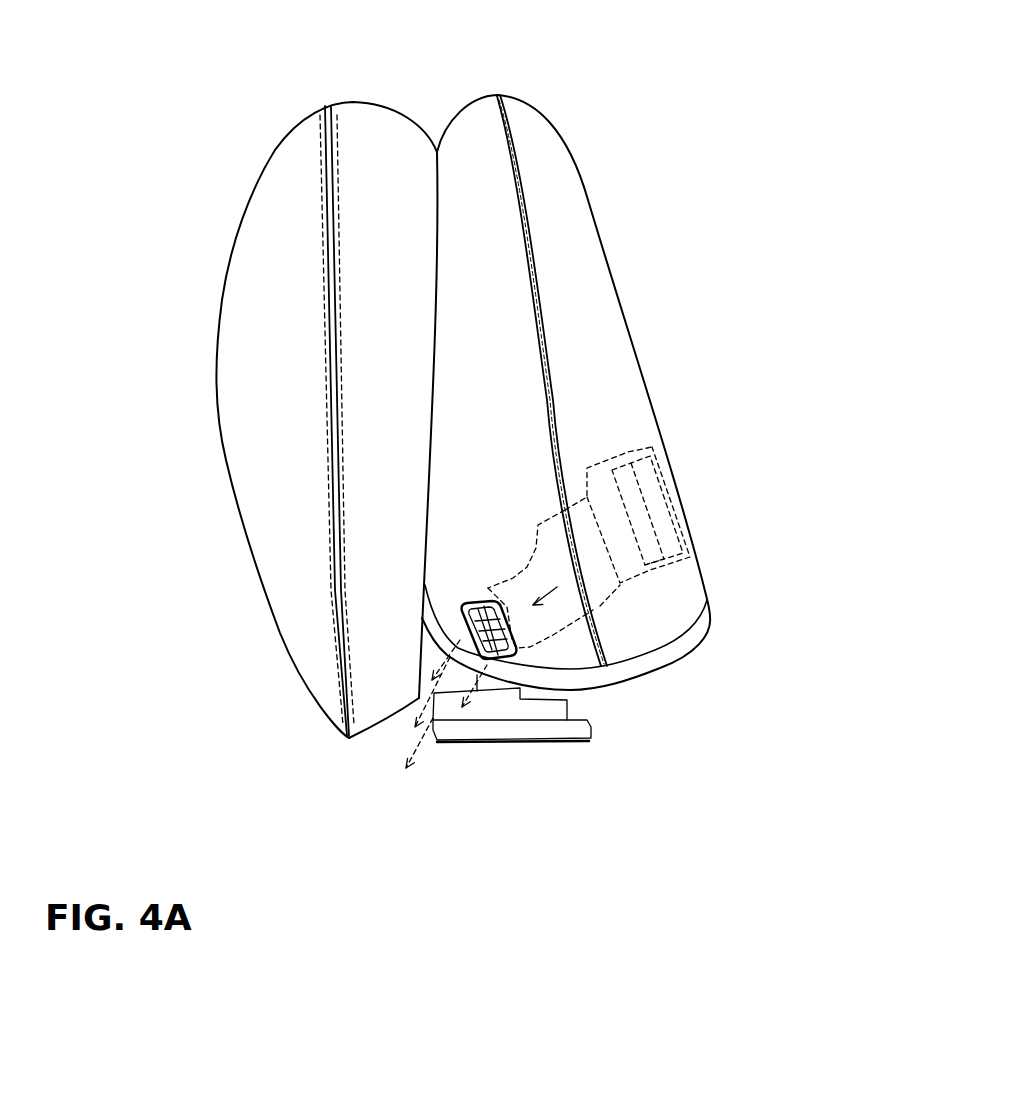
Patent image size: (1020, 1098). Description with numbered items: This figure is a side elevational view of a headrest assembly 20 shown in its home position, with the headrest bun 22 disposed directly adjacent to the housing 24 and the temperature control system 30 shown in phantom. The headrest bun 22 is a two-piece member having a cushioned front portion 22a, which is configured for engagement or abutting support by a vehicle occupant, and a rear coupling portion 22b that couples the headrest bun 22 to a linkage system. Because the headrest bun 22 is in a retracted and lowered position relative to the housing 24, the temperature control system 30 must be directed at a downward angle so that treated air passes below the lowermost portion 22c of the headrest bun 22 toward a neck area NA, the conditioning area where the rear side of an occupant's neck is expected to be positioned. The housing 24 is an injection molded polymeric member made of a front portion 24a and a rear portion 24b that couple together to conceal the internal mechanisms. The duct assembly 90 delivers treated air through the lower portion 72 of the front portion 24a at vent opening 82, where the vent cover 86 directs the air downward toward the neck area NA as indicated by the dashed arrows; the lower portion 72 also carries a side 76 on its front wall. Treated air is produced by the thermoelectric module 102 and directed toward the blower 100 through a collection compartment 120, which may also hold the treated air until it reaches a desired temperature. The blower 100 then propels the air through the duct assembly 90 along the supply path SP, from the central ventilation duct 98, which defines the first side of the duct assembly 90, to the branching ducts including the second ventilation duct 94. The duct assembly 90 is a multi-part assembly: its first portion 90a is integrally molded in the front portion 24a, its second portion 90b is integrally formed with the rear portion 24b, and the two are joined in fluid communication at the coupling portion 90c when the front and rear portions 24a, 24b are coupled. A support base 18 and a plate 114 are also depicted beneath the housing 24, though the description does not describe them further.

The headrest assembly 20 is at (585, 65).
The headrest bun 22 is at (155, 498).
The cushioned front portion 22a is at (253, 230).
The rear coupling portion 22b is at (367, 118).
The lowermost portion 22c is at (363, 740).
The housing 24 is at (606, 215).
The front portion 24a is at (482, 117).
The rear portion 24b is at (630, 323).
The temperature control system 30 is at (623, 605).
The lower portion 72 is at (462, 632).
The second side 76 is at (317, 657).
The second vent opening 82 is at (462, 604).
The vent cover 86 is at (455, 625).
The duct assembly 90 is at (567, 640).
The first portion 90a is at (537, 527).
The second portion 90b is at (572, 508).
The coupling portion 90c is at (543, 520).
The second ventilation duct 94 is at (517, 593).
The central ventilation duct 98 is at (598, 567).
The blower 100 is at (598, 466).
The thermoelectric module 102 is at (654, 455).
The support plate 114 is at (507, 688).
The collection compartment 120 is at (653, 563).
The headrest base 18 is at (480, 723).
The supply path SP is at (560, 593).
The neck area NA is at (320, 818).